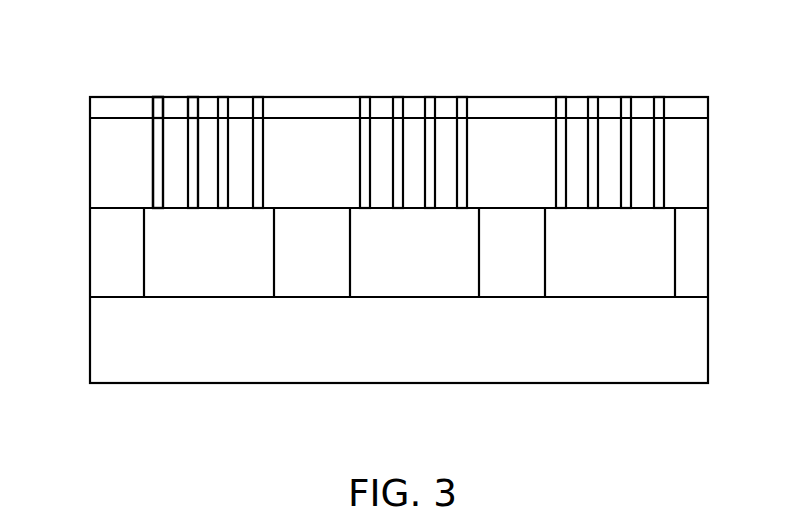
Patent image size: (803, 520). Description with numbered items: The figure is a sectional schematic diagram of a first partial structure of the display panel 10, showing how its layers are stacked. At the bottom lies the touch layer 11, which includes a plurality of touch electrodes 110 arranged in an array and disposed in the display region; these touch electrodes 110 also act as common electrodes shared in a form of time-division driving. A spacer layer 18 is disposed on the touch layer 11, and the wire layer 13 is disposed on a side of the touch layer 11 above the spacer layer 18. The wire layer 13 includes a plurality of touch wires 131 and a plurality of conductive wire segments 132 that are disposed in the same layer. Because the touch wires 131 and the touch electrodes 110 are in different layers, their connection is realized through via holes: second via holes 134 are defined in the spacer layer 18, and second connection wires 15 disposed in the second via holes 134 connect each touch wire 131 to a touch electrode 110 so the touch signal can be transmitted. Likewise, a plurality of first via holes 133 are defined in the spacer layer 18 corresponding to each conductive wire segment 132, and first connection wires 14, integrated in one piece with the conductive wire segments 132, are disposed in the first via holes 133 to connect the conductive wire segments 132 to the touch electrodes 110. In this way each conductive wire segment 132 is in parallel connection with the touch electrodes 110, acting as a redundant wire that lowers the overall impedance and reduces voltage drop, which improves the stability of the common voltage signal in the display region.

The display panel 10 is at (46, 46).
The touch layer 11 is at (685, 259).
The touch electrodes 110 is at (212, 260).
The wire layer 13 is at (685, 108).
The touch wires 131 is at (162, 115).
The conductive wire segments 132 is at (195, 115).
The first via holes 133 is at (198, 137).
The second via holes 134 is at (150, 137).
The first connection wires 14 is at (193, 187).
The second connection wires 15 is at (162, 159).
The spacer layer 18 is at (685, 163).